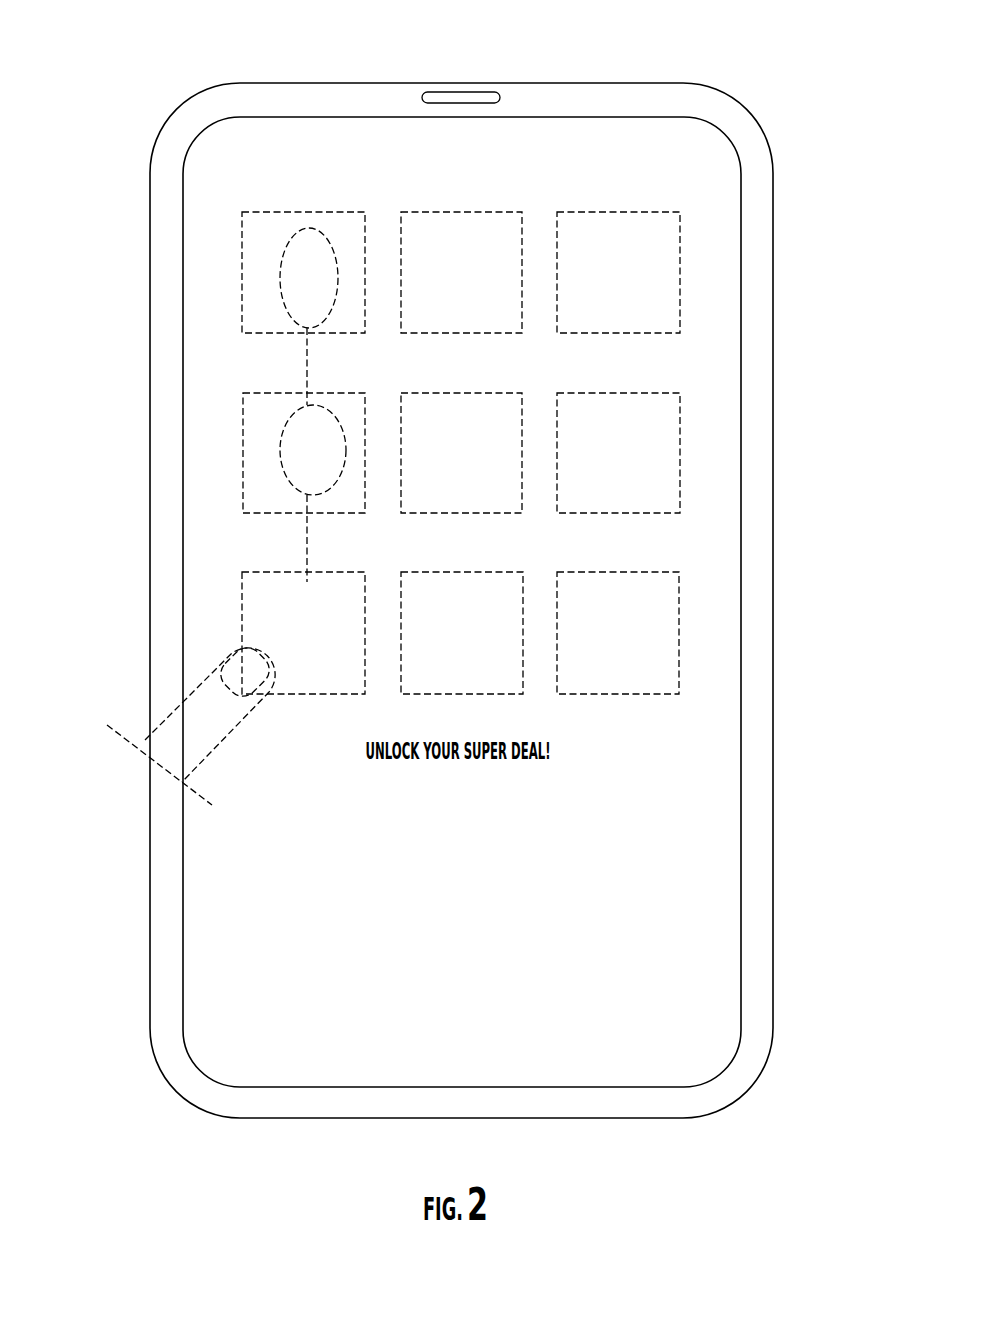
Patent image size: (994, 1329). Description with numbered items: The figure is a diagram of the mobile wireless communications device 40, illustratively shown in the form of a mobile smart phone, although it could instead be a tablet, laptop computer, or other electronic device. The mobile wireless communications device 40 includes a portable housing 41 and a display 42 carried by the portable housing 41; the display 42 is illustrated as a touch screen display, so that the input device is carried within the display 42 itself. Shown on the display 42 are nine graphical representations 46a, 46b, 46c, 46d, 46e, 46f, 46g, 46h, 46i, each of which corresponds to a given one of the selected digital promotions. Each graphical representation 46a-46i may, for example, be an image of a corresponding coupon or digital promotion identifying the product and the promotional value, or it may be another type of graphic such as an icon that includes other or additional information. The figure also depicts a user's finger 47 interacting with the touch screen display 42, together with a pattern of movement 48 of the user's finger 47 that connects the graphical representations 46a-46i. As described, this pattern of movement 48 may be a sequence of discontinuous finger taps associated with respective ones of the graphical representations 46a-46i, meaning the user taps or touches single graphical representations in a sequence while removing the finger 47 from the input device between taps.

The mobile wireless communications device 40 is at (163, 87).
The portable housing 41 is at (150, 155).
The display 42 is at (183, 230).
The graphical representation 46a is at (242, 277).
The graphical representation 46b is at (463, 212).
The graphical representation 46c is at (680, 232).
The graphical representation 46d is at (243, 452).
The graphical representation 46e is at (457, 393).
The graphical representation 46f is at (620, 393).
The graphical representation 46g is at (242, 592).
The graphical representation 46h is at (458, 572).
The graphical representation 46i is at (620, 572).
The user's finger 47 is at (117, 735).
The pattern of movement 48 is at (307, 537).